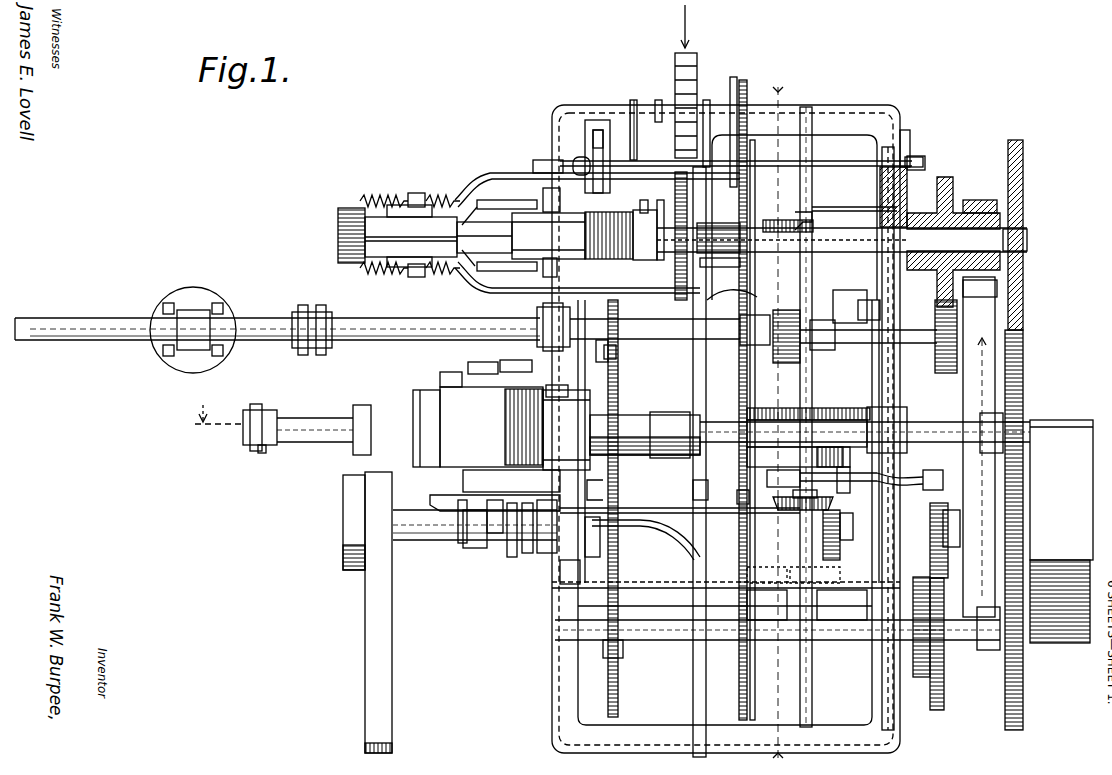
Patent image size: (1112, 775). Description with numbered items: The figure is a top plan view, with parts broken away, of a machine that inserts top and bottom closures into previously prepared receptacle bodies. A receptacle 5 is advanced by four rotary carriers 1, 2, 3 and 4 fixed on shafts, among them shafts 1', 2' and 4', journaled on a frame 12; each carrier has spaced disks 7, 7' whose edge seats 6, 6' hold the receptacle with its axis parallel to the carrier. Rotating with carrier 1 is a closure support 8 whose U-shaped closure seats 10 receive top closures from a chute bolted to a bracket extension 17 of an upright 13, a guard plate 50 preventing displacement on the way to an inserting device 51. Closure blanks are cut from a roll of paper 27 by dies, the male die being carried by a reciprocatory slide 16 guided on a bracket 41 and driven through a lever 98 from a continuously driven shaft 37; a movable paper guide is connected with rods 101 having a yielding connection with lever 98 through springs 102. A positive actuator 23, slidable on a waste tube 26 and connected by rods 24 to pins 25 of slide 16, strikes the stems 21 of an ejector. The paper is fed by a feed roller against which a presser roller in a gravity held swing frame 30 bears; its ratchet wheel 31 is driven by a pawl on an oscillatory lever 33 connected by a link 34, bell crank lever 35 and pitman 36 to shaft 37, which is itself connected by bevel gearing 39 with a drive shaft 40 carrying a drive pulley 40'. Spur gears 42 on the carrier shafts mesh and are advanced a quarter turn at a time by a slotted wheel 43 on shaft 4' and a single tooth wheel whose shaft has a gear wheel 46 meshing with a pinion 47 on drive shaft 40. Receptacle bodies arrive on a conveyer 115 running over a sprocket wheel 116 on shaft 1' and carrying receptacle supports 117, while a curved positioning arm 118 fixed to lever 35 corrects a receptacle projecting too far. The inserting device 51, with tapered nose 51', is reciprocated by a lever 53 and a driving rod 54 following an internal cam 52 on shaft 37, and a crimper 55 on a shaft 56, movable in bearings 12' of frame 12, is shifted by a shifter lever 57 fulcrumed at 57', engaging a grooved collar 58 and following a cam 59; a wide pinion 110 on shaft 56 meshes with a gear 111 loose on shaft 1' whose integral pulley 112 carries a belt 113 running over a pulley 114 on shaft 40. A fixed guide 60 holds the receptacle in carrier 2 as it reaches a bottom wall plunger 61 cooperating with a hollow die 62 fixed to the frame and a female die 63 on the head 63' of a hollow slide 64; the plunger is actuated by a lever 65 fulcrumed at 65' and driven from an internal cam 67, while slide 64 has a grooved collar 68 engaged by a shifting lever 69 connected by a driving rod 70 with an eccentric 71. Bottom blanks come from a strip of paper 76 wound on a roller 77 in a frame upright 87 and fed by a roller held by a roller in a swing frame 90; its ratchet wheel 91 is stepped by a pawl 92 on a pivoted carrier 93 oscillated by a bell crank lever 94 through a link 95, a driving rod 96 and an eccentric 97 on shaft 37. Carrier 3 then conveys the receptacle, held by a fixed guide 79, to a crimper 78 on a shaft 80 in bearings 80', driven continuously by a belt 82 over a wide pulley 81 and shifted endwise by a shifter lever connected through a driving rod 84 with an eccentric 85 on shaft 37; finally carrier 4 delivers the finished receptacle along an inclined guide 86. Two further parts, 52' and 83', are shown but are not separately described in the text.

The rotary carrier 1 is at (842, 249).
The shaft 1' is at (1027, 240).
The rotary carrier 2 is at (730, 498).
The shaft 2' is at (865, 420).
The rotary carrier 3 is at (982, 469).
The rotary carrier 4 is at (481, 539).
The shaft 4' is at (777, 642).
The receptacle 5 is at (780, 87).
The seat 6 is at (623, 651).
The seat 6' is at (767, 430).
The disk 7 is at (628, 498).
The disk 7' is at (750, 398).
The closure support 8 is at (593, 137).
The closure seat 10 is at (596, 130).
The frame 12 is at (698, 426).
The bearing 12' is at (887, 438).
The upright 13 is at (545, 277).
The reciprocatory slide 16 is at (484, 237).
The bracket extension 17 is at (648, 199).
The stem 21 is at (652, 268).
The positive actuator 23 is at (718, 206).
The rod 24 is at (480, 176).
The pin 25 is at (418, 193).
The tube 26 is at (543, 196).
The roll of paper 27 is at (600, 235).
The swing frame 30 is at (548, 236).
The ratchet wheel 31 is at (533, 166).
The oscillatory lever 33 is at (573, 160).
The link 34 is at (830, 162).
The bell crank lever 35 is at (910, 185).
The pitman 36 is at (800, 211).
The continuously driven shaft 37 is at (812, 703).
The bevel gearing 39 is at (790, 512).
The drive shaft 40 is at (828, 593).
The drive pulley 40' is at (1065, 477).
The bracket 41 is at (345, 263).
The spur gear 42 is at (1023, 300).
The slotted wheel 43 is at (920, 678).
The gear wheel 46 is at (944, 705).
The pinion 47 is at (948, 503).
The guard plate 50 is at (553, 327).
The inserting device 51 is at (277, 344).
The tapered nose 51' is at (600, 363).
The internal cam 52 is at (747, 288).
The rod 52' is at (854, 195).
The lever 53 is at (322, 345).
The driving rod 54 is at (690, 340).
The crimper 55 is at (750, 345).
The shaft 56 is at (920, 344).
The shifter lever 57 is at (876, 306).
The fulcrum 57' is at (850, 293).
The collar 58 is at (820, 350).
The cam 59 is at (800, 334).
The guide 60 is at (690, 415).
The bottom wall inserting device 61 is at (320, 420).
The hollow die 62 is at (597, 488).
The female die 63 is at (560, 396).
The head 63' is at (516, 357).
The hollow slide 64 is at (372, 458).
The actuating lever 65 is at (242, 434).
The fulcrum 65' is at (268, 457).
The internal cam 67 is at (835, 408).
The grooved collar 68 is at (413, 405).
The shifting lever 69 is at (515, 418).
The driving rod 70 is at (675, 458).
The eccentric 71 is at (773, 480).
The strip of paper 76 is at (491, 427).
The roller 77 is at (463, 475).
The crimper 78 is at (570, 572).
The guide 79 is at (693, 497).
The shaft 80 is at (475, 543).
The bearing 80' is at (468, 548).
The pulley 81 is at (345, 520).
The belt 82 is at (365, 608).
The arm 83' is at (543, 552).
The driving rod 84 is at (642, 538).
The eccentric 85 is at (514, 557).
The inclined guide 86 is at (693, 670).
The frame upright 87 is at (480, 362).
The swing frame 90 is at (528, 553).
The ratchet wheel 91 is at (496, 533).
The driving pawl 92 is at (462, 543).
The pawl carrier 93 is at (430, 500).
The bell crank lever 94 is at (871, 486).
The link 95 is at (633, 510).
The driving rod 96 is at (850, 460).
The eccentric 97 is at (793, 494).
The lever 98 is at (400, 204).
The rod 101 is at (503, 298).
The spring 102 is at (380, 197).
The wide pinion 110 is at (957, 320).
The gear 111 is at (950, 190).
The pulley 112 is at (982, 200).
The belt 113 is at (985, 380).
The pulley 114 is at (1045, 585).
The conveyer 115 is at (699, 60).
The sprocket wheel 116 is at (730, 262).
The receptacle support 117 is at (637, 150).
The positioning device 118 is at (775, 213).